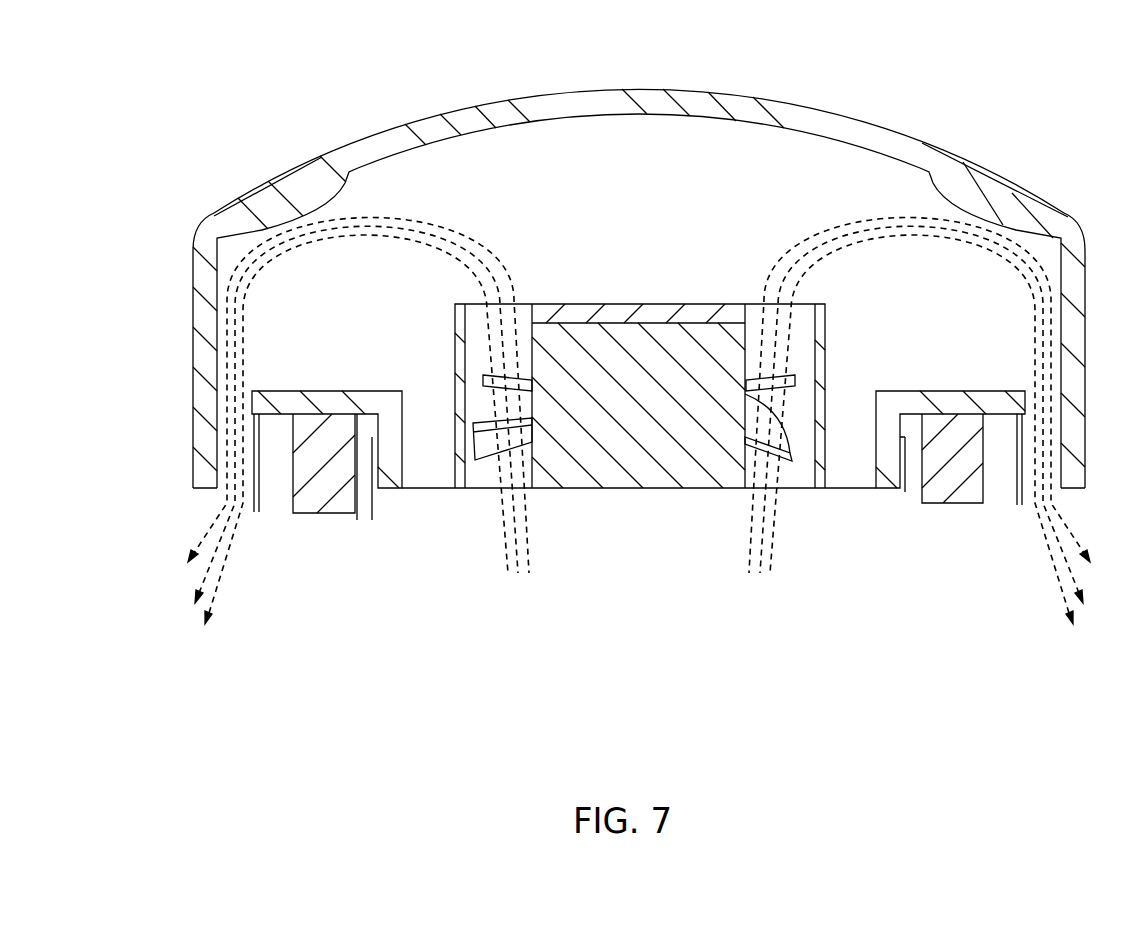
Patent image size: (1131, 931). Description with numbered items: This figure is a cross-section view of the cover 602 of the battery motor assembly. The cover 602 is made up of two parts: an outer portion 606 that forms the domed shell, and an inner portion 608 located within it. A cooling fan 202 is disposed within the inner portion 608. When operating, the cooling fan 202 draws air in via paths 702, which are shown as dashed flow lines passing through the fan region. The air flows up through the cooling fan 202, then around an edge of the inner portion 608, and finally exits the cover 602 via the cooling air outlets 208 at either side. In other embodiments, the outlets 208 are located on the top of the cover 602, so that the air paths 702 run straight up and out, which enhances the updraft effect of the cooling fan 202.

The cover 602 is at (170, 164).
The outer portion 606 is at (570, 92).
The cooling fan 202 is at (700, 489).
The inner portion 608 is at (385, 489).
The paths 702 is at (639, 416).
The cooling air outlets 208 is at (248, 524).